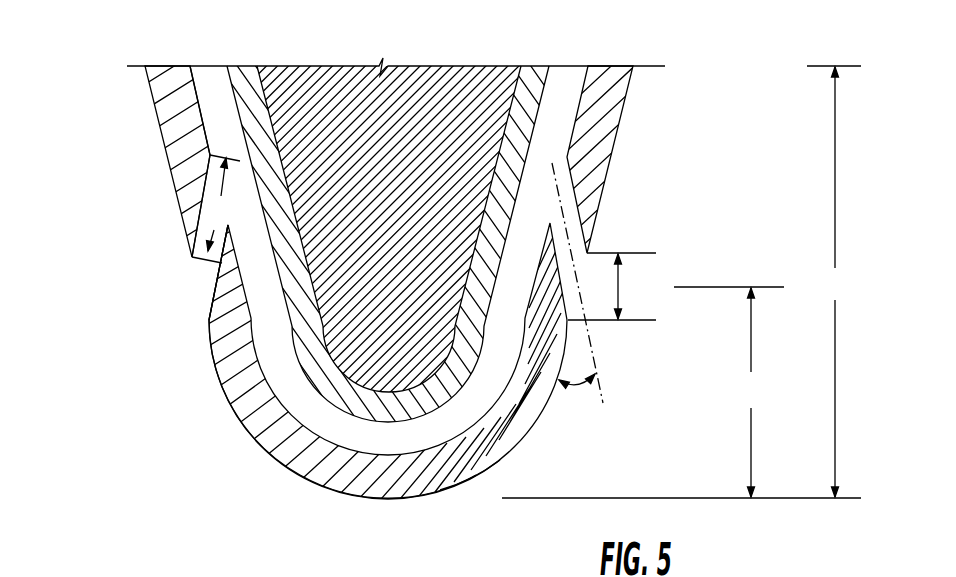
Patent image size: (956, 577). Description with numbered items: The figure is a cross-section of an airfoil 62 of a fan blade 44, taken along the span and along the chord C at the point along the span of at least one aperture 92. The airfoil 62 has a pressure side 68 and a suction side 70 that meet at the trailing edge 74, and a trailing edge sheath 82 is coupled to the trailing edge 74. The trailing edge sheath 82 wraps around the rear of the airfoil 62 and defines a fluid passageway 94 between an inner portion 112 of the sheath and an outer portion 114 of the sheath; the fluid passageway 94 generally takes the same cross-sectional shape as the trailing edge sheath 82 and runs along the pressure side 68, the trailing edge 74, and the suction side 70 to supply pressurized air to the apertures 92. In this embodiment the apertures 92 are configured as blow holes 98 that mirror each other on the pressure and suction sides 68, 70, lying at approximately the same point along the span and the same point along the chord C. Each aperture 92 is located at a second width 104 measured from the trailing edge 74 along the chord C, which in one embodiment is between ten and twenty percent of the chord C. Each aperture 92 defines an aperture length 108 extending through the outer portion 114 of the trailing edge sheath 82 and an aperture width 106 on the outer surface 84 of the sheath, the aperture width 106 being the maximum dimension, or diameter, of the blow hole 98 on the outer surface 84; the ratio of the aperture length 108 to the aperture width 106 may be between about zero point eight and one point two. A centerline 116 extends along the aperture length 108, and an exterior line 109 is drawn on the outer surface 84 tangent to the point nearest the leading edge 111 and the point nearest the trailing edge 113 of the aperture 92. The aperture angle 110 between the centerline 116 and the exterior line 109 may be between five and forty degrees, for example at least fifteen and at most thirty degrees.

The airfoil 62 is at (76, 80).
The fan blade 44 is at (725, 98).
The trailing edge sheath 82 is at (552, 85).
The fluid passageway 94 is at (305, 411).
The outer portion 114 is at (218, 392).
The trailing edge 74 is at (392, 512).
The outer surface 84 is at (465, 483).
The point nearest the trailing edge 113 is at (205, 322).
The pressure side 68 is at (159, 174).
The blow hole 98 is at (174, 228).
The point nearest the leading edge 111 is at (190, 259).
The exterior line 109 is at (197, 288).
The aperture length 108 is at (222, 203).
The inner portion 112 is at (233, 95).
The suction side 70 is at (665, 263).
The aperture 92 is at (612, 215).
The centerline 116 is at (602, 390).
The aperture angle 110 is at (575, 382).
The aperture width 106 is at (613, 286).
The second width 104 is at (681, 392).
The chord C is at (834, 281).